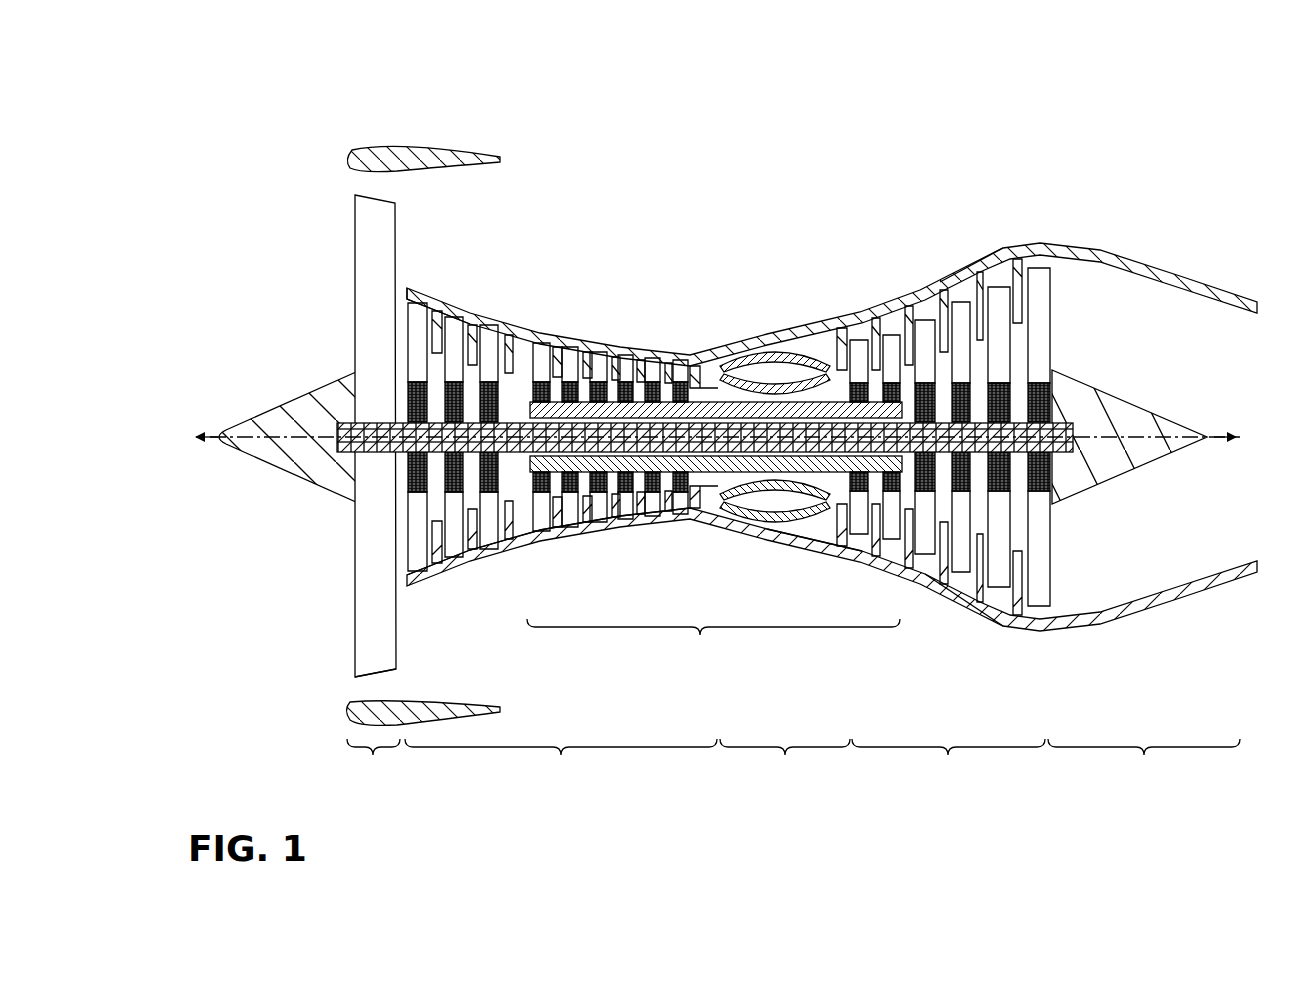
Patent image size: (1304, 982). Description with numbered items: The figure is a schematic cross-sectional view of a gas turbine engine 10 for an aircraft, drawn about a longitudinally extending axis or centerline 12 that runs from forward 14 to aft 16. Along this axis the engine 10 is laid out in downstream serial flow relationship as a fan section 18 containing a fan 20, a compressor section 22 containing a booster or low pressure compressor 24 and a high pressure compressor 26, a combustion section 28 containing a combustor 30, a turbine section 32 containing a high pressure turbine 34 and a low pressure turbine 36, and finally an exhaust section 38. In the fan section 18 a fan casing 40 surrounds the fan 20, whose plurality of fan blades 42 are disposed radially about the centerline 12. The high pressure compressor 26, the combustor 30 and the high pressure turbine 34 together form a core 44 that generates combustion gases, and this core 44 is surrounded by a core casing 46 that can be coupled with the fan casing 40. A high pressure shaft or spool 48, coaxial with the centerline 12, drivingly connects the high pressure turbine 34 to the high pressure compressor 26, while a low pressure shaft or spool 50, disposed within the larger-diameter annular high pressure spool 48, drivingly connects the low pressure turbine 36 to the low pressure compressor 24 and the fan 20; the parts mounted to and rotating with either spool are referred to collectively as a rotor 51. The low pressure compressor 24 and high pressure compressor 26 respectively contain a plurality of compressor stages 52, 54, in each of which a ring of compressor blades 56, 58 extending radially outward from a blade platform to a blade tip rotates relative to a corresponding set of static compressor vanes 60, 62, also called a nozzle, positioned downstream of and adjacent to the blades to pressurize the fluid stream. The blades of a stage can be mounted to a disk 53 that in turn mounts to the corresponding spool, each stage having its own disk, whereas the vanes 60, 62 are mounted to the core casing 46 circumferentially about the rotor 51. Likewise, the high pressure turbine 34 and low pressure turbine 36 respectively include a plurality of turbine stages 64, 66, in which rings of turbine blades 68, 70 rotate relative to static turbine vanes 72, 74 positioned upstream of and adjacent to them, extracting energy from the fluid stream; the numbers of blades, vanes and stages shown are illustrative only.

The gas turbine engine 10 is at (236, 113).
The centerline 12 is at (268, 440).
The forward 14 is at (189, 438).
The aft 16 is at (1241, 438).
The fan section 18 is at (373, 761).
The fan 20 is at (348, 250).
The compressor section 22 is at (561, 761).
The low pressure compressor 24 is at (520, 562).
The high pressure compressor 26 is at (660, 537).
The combustion section 28 is at (785, 761).
The combustor 30 is at (826, 353).
The turbine section 32 is at (948, 761).
The high pressure turbine 34 is at (838, 559).
The low pressure turbine 36 is at (949, 602).
The exhaust section 38 is at (1144, 761).
The fan casing 40 is at (362, 162).
The fan blades 42 is at (365, 627).
The core 44 is at (713, 641).
The core casing 46 is at (757, 337).
The high pressure shaft 48 is at (699, 348).
The low pressure shaft 50 is at (515, 420).
The rotor 51 is at (645, 416).
The compressor stages 52 is at (406, 275).
The disk 53 is at (960, 397).
The compressor stages 54 is at (542, 312).
The compressor blades 56 is at (420, 312).
The compressor blades 58 is at (557, 350).
The static compressor vanes 60 is at (438, 335).
The static compressor vanes 62 is at (568, 345).
The turbine stages 64 is at (867, 307).
The turbine stages 66 is at (977, 257).
The turbine blades 68 is at (893, 347).
The turbine blades 70 is at (997, 300).
The static turbine vanes 72 is at (880, 340).
The static turbine vanes 74 is at (985, 290).